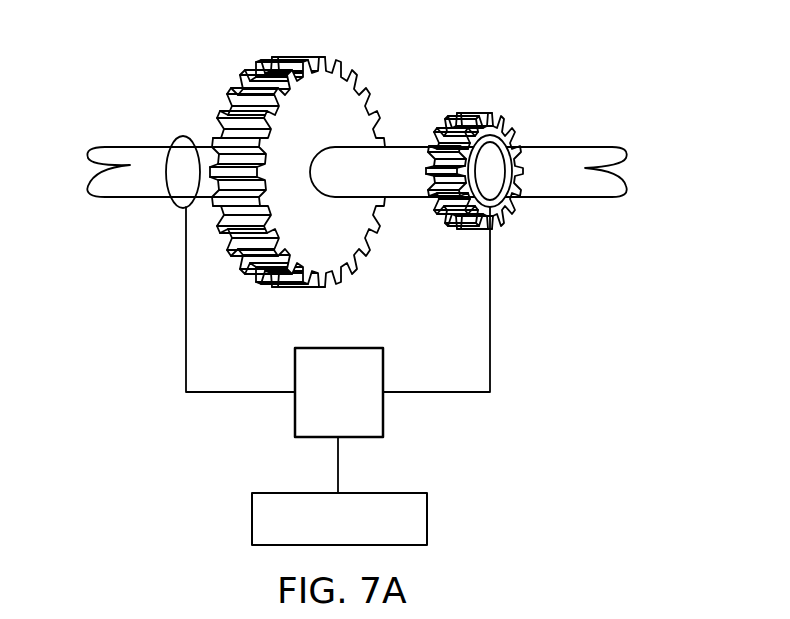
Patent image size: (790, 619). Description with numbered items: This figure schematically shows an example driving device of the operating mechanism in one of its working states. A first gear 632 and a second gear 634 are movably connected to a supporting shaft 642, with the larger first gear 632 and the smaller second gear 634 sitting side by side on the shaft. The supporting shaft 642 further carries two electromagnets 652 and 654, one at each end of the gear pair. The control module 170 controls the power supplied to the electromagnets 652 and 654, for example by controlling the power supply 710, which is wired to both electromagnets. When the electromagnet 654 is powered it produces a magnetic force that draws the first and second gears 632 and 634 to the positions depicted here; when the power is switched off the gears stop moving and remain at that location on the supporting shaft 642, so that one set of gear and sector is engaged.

The first gear 632 is at (284, 57).
The second gear 634 is at (471, 112).
The supporting shaft 642 is at (550, 147).
The electromagnet 652 is at (164, 188).
The electromagnet 654 is at (508, 205).
The power supply 710 is at (365, 418).
The control module 170 is at (362, 531).